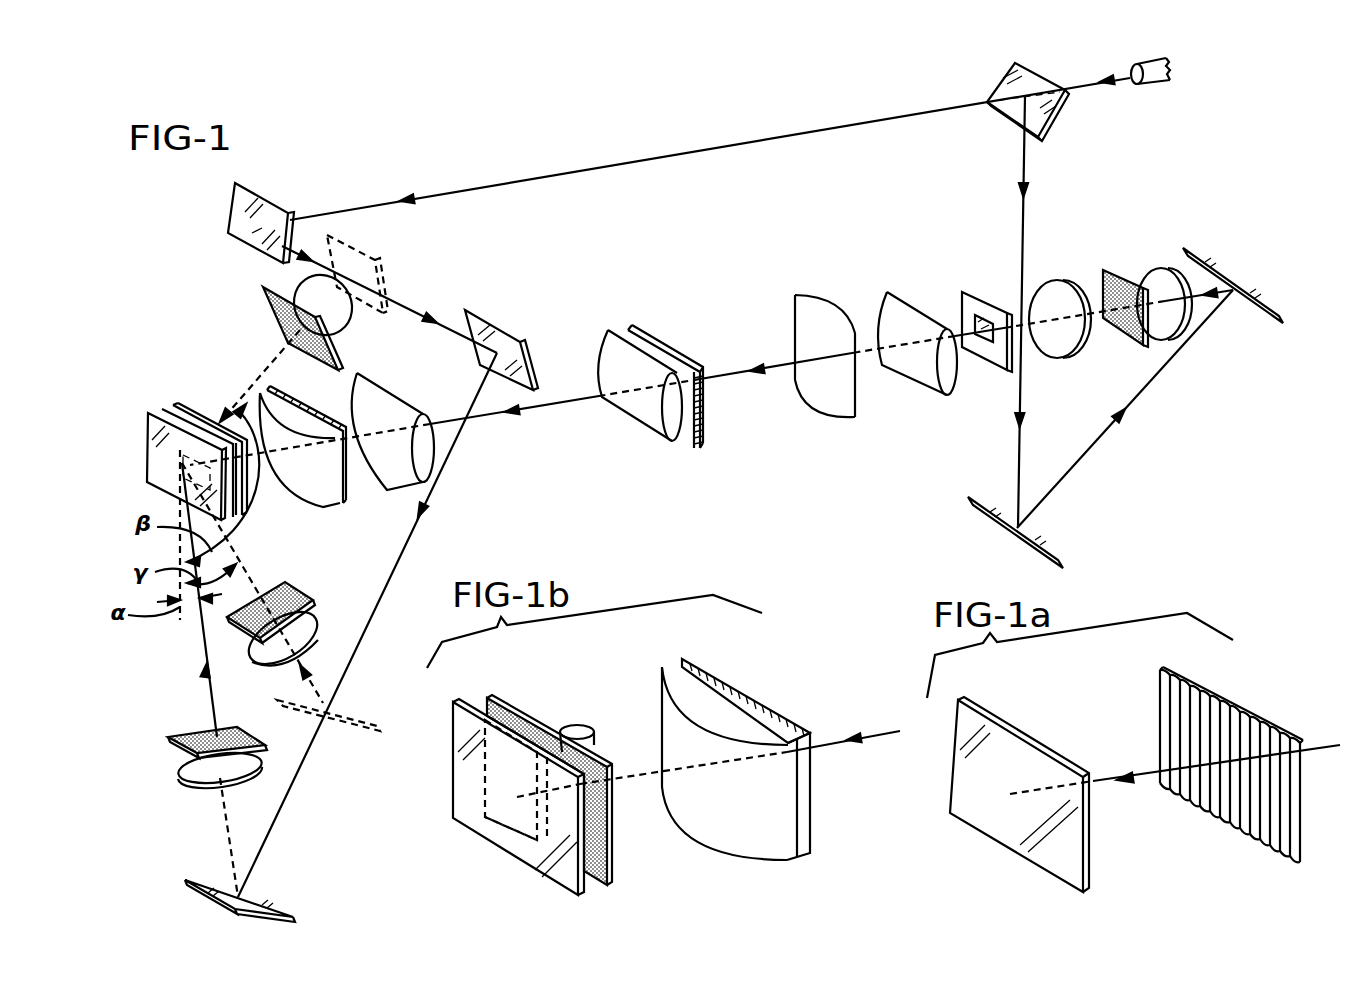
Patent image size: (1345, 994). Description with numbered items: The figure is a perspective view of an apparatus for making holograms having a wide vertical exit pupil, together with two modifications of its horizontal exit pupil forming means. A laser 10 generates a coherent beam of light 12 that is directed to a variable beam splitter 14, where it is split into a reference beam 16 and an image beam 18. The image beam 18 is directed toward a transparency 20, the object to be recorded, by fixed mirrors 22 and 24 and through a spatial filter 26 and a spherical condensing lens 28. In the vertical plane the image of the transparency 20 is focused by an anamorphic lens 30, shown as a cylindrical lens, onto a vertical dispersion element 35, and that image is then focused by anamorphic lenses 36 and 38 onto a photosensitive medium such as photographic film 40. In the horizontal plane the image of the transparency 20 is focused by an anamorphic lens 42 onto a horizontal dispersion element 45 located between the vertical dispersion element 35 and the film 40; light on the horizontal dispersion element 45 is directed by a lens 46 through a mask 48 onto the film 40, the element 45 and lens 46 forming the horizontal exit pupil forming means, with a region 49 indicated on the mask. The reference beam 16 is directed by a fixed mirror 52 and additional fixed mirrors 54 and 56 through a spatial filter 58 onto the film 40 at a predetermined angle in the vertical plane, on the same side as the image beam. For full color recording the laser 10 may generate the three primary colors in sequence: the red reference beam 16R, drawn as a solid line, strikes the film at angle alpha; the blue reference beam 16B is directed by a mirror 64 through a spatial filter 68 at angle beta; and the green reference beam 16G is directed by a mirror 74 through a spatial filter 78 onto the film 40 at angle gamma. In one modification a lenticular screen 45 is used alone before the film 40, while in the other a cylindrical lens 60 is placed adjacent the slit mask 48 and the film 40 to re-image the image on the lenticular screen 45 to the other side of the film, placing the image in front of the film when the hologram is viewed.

In FIG. 1, the laser 10 is at (1158, 86).
In FIG. 1, the coherent beam of light 12 is at (1075, 88).
In FIG. 1, the variable beam splitter 14 is at (1023, 104).
In FIG. 1, the reference beam 16 is at (860, 122).
In FIG. 1, the image beam 18 is at (1025, 166).
In FIG. 1b, the image beam 18 is at (826, 745).
In FIG. 1a, the image beam 18 is at (1314, 750).
In FIG. 1, the transparency 20 is at (972, 298).
In FIG. 1, the fixed mirror 22 is at (1047, 545).
In FIG. 1, the fixed mirror 24 is at (1222, 265).
In FIG. 1, the spatial filter 26 is at (1095, 263).
In FIG. 1, the spherical condensing lens 28 is at (1055, 284).
In FIG. 1, the anamorphic lens 30 is at (893, 306).
In FIG. 1, the vertical dispersion means 35 is at (655, 347).
In FIG. 1, the anamorphic lens 36 is at (607, 358).
In FIG. 1, the anamorphic lens 38 is at (385, 457).
In FIG. 1, the photographic film 40 is at (157, 443).
In FIG. 1b, the photographic film 40 is at (460, 784).
In FIG. 1a, the photographic film 40 is at (962, 785).
In FIG. 1, the anamorphic lens 42 is at (797, 318).
In FIG. 1, the horizontal dispersion element 45 is at (333, 420).
In FIG. 1b, the horizontal dispersion element 45 is at (702, 673).
In FIG. 1a, the horizontal dispersion element 45 is at (1165, 694).
In FIG. 1, the lens 46 is at (323, 482).
In FIG. 1b, the lens 46 is at (665, 707).
In FIG. 1, the mask 48 is at (173, 414).
In FIG. 1b, the mask 48 is at (505, 698).
In FIG. 1, the recording region 49 is at (207, 432).
In FIG. 1b, the recording region 49 is at (543, 745).
In FIG. 1, the fixed mirror 52 is at (242, 213).
In FIG. 1, the fixed mirror 54 is at (484, 318).
In FIG. 1, the fixed mirror 56 is at (263, 900).
In FIG. 1, the spatial filter 58 is at (178, 788).
In FIG. 1b, the cylindrical lens 60 is at (582, 733).
In FIG. 1, the mirror 64 is at (376, 272).
In FIG. 1, the spatial filter 68 is at (350, 316).
In FIG. 1, the mirror 74 is at (347, 713).
In FIG. 1, the spatial filter 78 is at (318, 585).
In FIG. 1, the reference beam for blue 16B is at (278, 355).
In FIG. 1, the reference beam for green 16G is at (245, 566).
In FIG. 1, the reference beam for red 16R is at (200, 643).